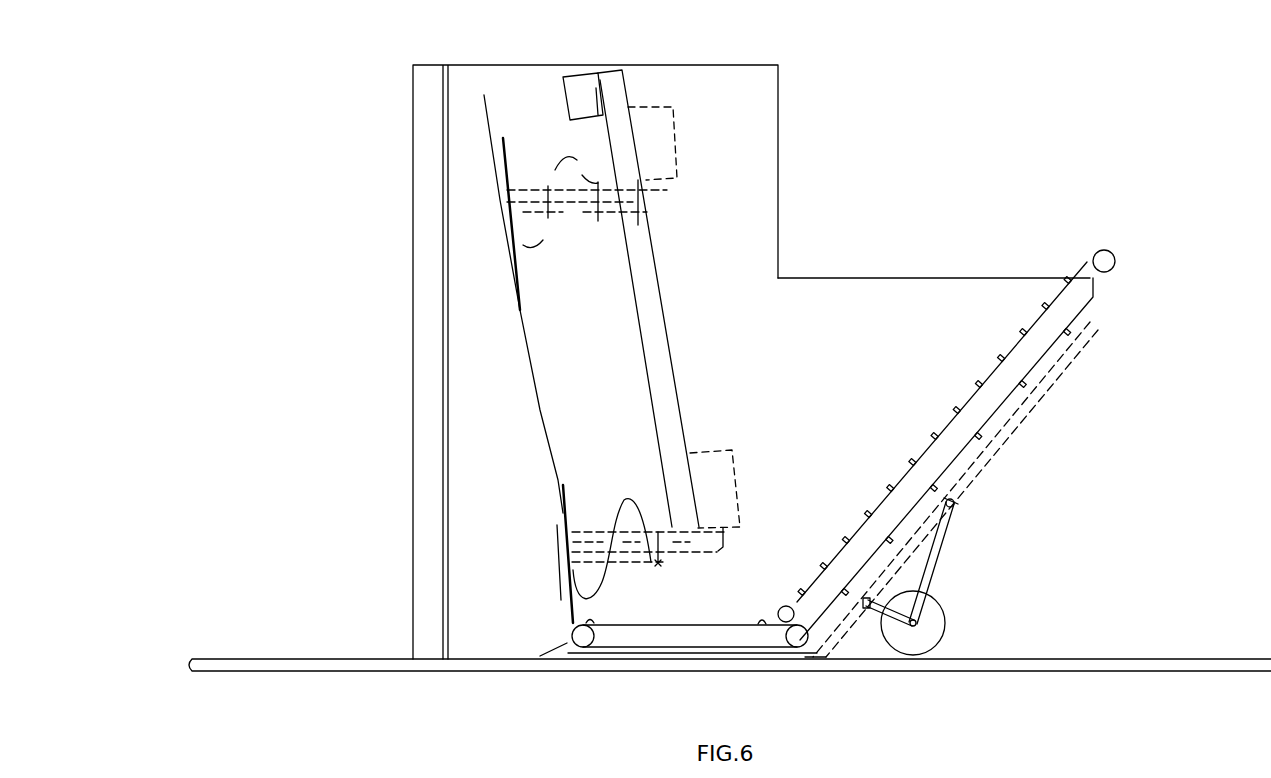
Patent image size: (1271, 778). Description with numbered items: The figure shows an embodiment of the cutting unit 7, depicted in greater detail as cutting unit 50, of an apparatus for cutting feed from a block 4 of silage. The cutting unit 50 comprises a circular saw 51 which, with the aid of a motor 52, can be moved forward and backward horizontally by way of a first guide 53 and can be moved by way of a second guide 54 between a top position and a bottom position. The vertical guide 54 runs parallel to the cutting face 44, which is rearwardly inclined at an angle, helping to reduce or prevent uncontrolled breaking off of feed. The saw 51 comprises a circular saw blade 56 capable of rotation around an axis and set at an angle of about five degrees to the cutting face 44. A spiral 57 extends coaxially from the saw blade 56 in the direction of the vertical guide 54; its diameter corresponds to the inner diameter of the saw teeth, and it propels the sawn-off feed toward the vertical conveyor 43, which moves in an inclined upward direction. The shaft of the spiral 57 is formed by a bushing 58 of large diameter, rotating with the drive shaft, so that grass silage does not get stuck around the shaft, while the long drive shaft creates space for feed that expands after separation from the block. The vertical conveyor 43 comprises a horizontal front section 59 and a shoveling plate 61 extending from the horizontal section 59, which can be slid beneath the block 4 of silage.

The block 4 is at (470, 543).
The cutting unit 7 is at (970, 208).
The vertical conveyor 43 is at (900, 510).
The cutting face 44 is at (523, 298).
The cutting unit 50 is at (938, 153).
The circular saw 51 is at (563, 517).
The motor 52 is at (717, 475).
The first guide 53 is at (585, 90).
The second guide 54 is at (650, 305).
The circular saw blade 56 is at (563, 583).
The spiral 57 is at (633, 510).
The bushing 58 is at (630, 555).
The horizontal front section 59 is at (770, 635).
The shoveling plate 61 is at (559, 650).